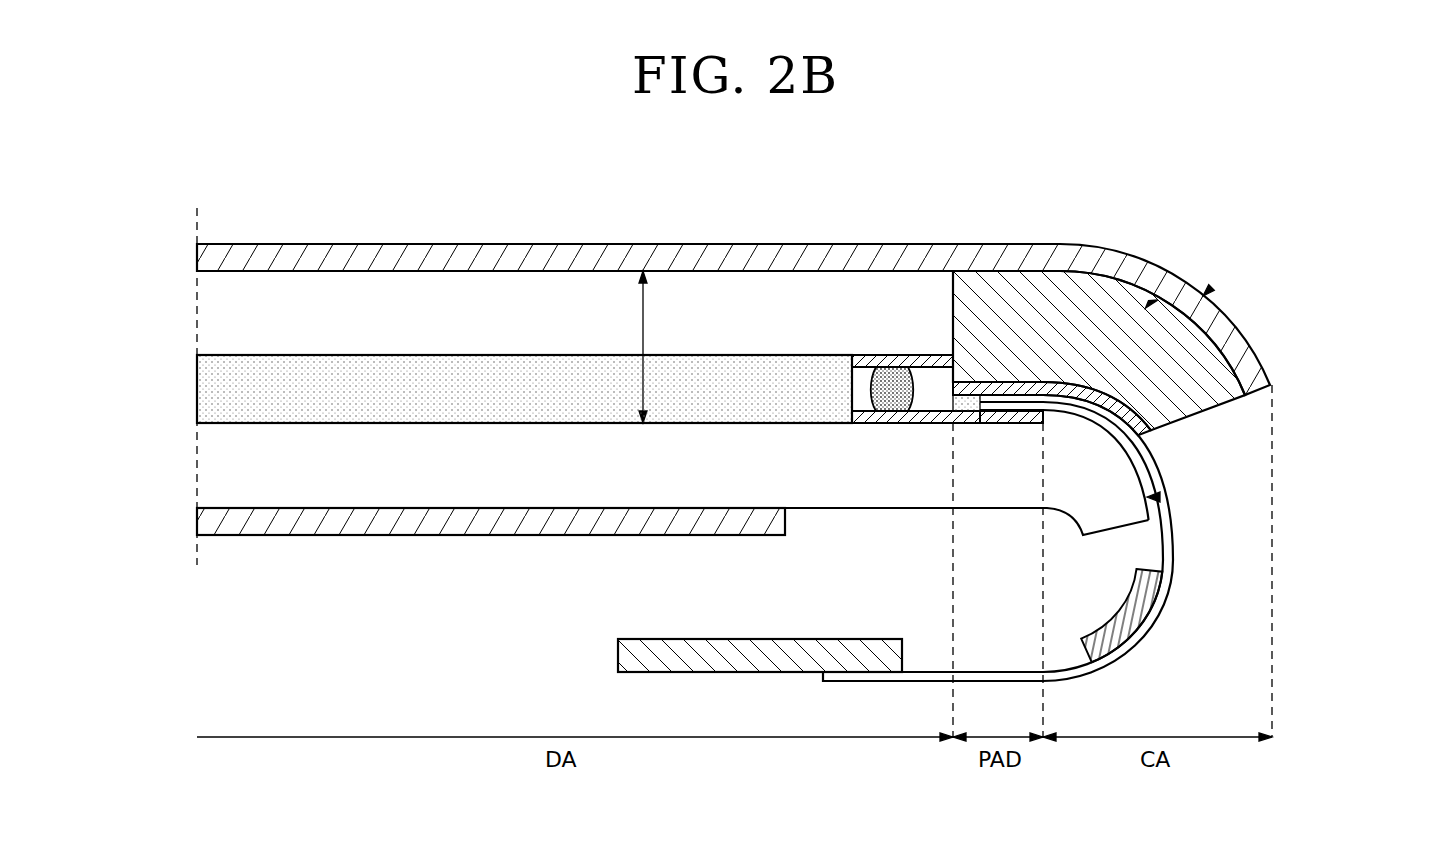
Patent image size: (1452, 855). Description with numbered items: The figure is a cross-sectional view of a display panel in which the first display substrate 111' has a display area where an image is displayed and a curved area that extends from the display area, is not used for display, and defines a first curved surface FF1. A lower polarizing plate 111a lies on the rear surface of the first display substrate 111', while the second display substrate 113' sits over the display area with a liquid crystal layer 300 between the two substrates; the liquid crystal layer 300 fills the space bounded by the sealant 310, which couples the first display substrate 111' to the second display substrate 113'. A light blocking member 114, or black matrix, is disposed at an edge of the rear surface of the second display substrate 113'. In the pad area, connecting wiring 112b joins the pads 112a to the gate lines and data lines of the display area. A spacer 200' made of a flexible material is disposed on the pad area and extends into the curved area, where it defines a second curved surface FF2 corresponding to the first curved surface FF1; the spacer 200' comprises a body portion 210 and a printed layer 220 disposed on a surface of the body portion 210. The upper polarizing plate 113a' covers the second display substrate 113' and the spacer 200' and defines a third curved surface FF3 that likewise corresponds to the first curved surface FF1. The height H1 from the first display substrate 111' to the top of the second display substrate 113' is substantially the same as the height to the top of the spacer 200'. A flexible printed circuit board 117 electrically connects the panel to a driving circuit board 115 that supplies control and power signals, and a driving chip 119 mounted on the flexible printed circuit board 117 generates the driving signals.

The upper polarizing plate 113a' is at (676, 319).
The second display substrate 113' is at (525, 313).
The liquid crystal layer 300 is at (205, 392).
The sealant 310 is at (893, 376).
The light blocking member 114 is at (859, 354).
The connecting wiring 112b is at (888, 425).
The pad 112a is at (1000, 425).
The first display substrate 111' is at (623, 472).
The lower polarizing plate 111a is at (205, 520).
The driving circuit board 115 is at (810, 646).
The flexible printed circuit board 117 is at (1168, 538).
The driving chip 119 is at (1138, 603).
The body portion 210 is at (1222, 406).
The printed layer 220 is at (1151, 432).
The spacer 200' is at (1186, 368).
The first curved surface FF1 is at (1159, 497).
The second curved surface FF2 is at (1150, 302).
The third curved surface FF3 is at (1209, 291).
The height H1 is at (629, 347).